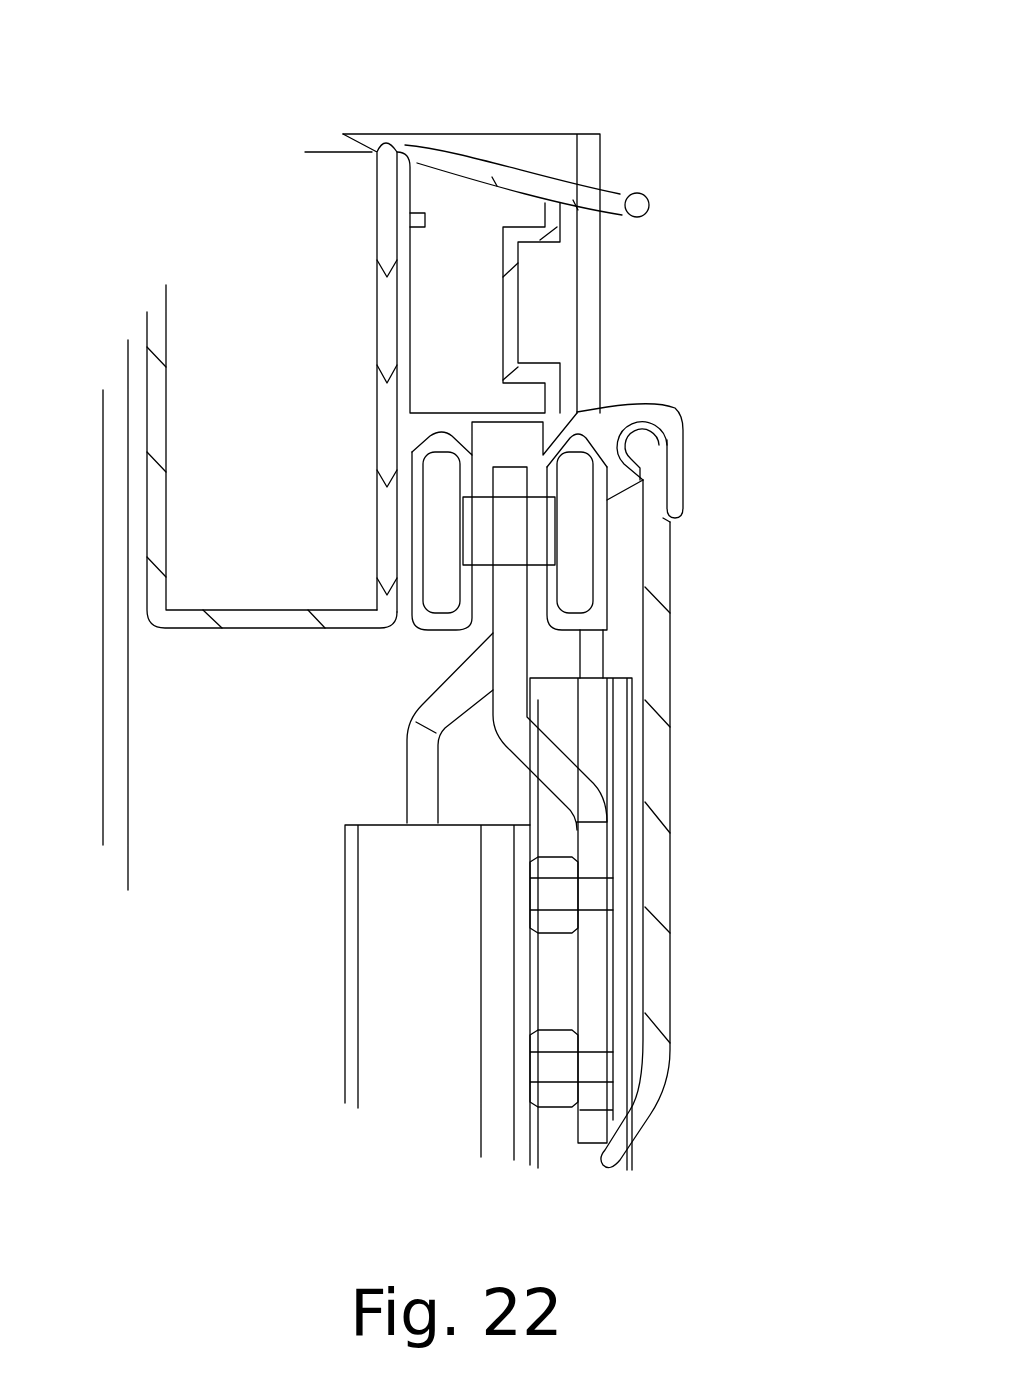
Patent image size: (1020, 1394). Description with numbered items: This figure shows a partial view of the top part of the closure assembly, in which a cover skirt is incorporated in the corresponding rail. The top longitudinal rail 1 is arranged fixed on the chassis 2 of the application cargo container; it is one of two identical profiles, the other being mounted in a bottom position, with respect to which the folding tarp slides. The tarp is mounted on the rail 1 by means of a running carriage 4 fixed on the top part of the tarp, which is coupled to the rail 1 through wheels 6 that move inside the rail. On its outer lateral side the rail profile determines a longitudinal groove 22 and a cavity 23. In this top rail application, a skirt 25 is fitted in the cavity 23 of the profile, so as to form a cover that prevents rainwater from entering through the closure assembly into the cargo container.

The longitudinal rail 1 is at (620, 527).
The chassis 2 is at (385, 217).
The running carriage 4 is at (510, 705).
The wheels 6 is at (643, 490).
The longitudinal groove 22 is at (530, 312).
The cavity 23 is at (668, 440).
The skirt 25 is at (657, 878).